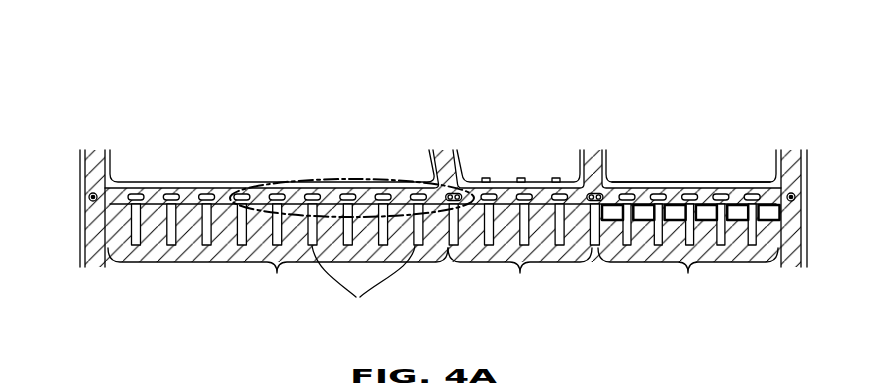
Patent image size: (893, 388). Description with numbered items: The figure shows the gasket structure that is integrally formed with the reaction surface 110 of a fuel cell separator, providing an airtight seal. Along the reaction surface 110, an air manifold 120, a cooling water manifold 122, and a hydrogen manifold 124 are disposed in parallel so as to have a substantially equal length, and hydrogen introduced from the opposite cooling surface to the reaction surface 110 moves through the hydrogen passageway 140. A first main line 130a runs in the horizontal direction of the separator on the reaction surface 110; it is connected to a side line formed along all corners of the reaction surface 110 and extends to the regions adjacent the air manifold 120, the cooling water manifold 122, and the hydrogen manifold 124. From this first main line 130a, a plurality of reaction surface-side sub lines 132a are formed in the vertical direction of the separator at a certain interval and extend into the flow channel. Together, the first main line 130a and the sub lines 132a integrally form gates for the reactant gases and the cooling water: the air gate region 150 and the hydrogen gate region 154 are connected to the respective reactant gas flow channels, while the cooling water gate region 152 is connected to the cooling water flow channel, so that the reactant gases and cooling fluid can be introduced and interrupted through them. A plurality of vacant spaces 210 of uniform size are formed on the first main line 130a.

The reaction surface 110 is at (188, 246).
The air manifold 120 is at (197, 176).
The cooling water manifold 122 is at (520, 177).
The hydrogen manifold 124 is at (690, 181).
The first main line 130a is at (335, 178).
The reaction surface-side sub line 132a is at (363, 286).
The hydrogen passageway 140 is at (642, 212).
The air gate region 150 is at (283, 253).
The cooling water gate region 152 is at (523, 253).
The hydrogen gate region 154 is at (693, 180).
The vacant space 210 is at (717, 190).